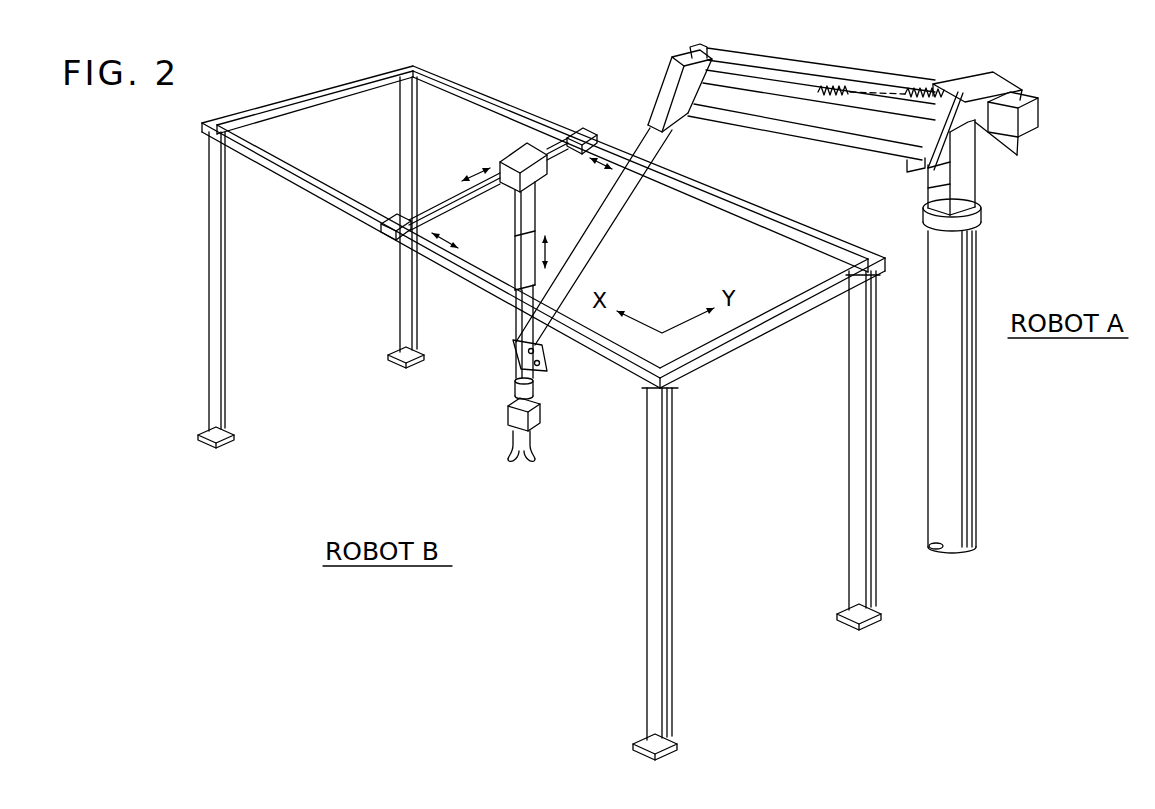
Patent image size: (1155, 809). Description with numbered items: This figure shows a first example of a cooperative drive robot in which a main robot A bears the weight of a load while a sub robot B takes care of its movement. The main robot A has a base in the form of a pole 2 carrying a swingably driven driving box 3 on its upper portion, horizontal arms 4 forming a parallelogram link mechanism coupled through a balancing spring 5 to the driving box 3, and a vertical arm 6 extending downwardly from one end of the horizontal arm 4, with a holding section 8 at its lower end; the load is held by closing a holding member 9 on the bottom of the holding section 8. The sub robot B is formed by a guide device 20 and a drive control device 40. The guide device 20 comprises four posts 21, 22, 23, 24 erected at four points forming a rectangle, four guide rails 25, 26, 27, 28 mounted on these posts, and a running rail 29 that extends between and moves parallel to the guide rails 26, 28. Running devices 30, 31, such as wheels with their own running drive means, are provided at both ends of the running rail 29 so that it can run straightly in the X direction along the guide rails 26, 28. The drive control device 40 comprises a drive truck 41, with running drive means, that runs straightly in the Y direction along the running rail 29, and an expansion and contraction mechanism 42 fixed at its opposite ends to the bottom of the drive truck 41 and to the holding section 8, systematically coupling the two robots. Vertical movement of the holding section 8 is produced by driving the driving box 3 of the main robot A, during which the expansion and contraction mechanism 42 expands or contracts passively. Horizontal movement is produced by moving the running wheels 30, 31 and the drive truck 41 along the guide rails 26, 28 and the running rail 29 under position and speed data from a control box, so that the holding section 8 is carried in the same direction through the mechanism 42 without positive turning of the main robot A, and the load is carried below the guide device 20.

The pole 2 is at (965, 403).
The driving box 3 is at (1000, 92).
The horizontal arms 4 is at (772, 88).
The balancing spring 5 is at (833, 92).
The vertical arm 6 is at (634, 137).
The holding section 8 is at (580, 399).
The holding member 9 is at (542, 441).
The guide device 20 is at (822, 568).
The post 21 is at (857, 441).
The post 22 is at (650, 542).
The post 23 is at (223, 327).
The post 24 is at (415, 297).
The guide rail 25 is at (780, 322).
The guide rail 26 is at (288, 168).
The guide rail 27 is at (274, 103).
The guide rail 28 is at (812, 227).
The running rail 29 is at (475, 193).
The running device 30 is at (382, 232).
The running device 31 is at (584, 128).
The drive control device 40 is at (464, 177).
The drive truck 41 is at (518, 152).
The expansion and contraction mechanism 42 is at (540, 207).